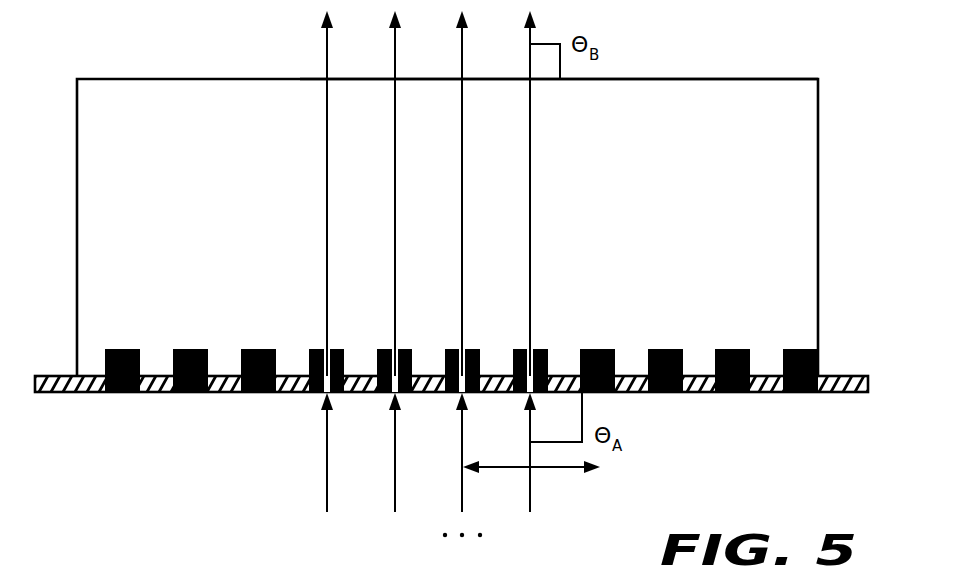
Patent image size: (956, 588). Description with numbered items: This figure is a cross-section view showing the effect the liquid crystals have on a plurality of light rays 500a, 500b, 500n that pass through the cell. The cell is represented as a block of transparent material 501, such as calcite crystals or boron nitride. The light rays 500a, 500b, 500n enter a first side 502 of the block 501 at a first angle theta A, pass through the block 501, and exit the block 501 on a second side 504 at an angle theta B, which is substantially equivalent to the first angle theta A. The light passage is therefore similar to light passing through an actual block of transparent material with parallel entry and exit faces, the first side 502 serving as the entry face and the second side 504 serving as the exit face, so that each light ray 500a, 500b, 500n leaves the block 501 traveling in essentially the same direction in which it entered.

The light ray 500a is at (327, 460).
The light ray 500b is at (395, 493).
The light ray 500n is at (530, 493).
The block of transparent material 501 is at (190, 165).
The first side 502 is at (695, 393).
The second side 504 is at (720, 79).